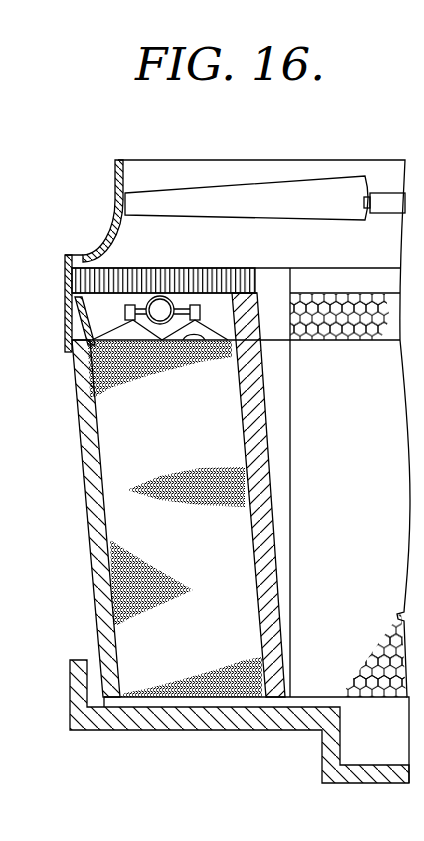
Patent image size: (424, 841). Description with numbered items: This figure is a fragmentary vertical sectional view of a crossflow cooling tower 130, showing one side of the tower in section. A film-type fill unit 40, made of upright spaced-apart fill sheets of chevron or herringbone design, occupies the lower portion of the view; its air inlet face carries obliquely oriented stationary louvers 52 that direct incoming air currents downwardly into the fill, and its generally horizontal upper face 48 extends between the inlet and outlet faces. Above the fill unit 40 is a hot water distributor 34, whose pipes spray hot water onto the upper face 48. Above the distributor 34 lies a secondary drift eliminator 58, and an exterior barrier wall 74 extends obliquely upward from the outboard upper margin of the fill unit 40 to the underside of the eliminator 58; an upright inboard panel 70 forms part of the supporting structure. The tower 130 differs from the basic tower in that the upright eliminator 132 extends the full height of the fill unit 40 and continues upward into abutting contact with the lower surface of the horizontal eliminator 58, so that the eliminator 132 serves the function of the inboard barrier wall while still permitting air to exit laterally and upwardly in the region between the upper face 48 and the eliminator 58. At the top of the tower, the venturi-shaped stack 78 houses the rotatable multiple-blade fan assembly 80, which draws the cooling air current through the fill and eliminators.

The tower 130 is at (336, 140).
The fan assembly 80 is at (285, 192).
The venturi-shaped stack 78 is at (118, 185).
The secondary drift eliminator 58 is at (118, 268).
The inboard panel 70 is at (68, 325).
The exterior barrier wall 74 is at (85, 300).
The hot water distributor 34 is at (183, 287).
The upper face 48 is at (213, 357).
The upright eliminator 132 is at (267, 518).
The louver 52 is at (100, 603).
The fill unit 40 is at (119, 458).